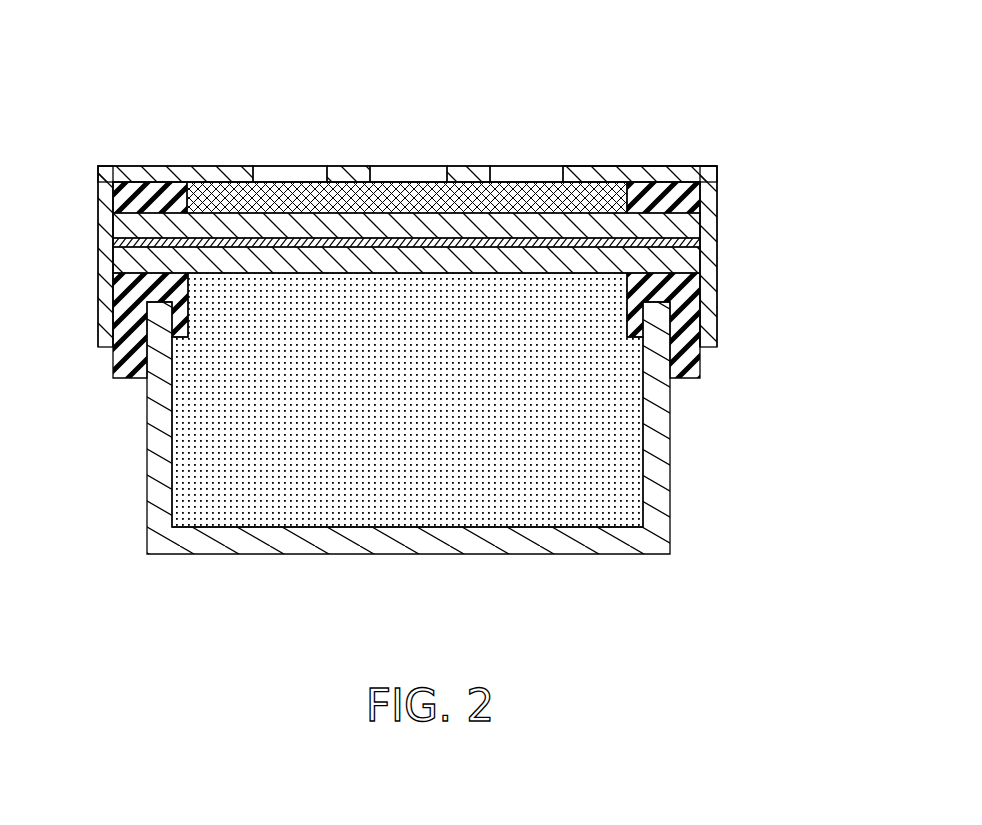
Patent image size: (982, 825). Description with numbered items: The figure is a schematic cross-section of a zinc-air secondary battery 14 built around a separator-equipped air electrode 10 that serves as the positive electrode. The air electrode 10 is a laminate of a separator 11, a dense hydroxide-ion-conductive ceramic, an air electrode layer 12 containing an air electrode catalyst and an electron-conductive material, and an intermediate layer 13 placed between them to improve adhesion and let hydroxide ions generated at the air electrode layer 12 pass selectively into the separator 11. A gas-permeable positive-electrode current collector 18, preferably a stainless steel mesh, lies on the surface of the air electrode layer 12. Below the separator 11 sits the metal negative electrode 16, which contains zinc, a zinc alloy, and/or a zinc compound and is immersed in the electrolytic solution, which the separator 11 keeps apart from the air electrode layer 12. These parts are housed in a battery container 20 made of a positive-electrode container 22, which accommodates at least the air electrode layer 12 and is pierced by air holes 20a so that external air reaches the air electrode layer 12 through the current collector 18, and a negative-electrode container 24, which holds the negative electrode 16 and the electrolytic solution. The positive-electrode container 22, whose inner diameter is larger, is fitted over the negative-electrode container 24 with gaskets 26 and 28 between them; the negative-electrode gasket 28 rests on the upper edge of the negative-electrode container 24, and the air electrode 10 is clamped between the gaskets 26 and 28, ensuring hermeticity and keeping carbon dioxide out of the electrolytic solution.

The zinc-air secondary battery 14 is at (118, 88).
The separator-equipped air electrode 10 is at (480, 240).
The separator 11 is at (452, 269).
The air electrode layer 12 is at (683, 225).
The intermediate layer 13 is at (683, 242).
The metal negative electrode 16 is at (440, 503).
The positive-electrode current collector 18 is at (512, 197).
The battery container 20 is at (108, 298).
The air holes 20a is at (290, 175).
The positive-electrode container 22 is at (601, 176).
The negative-electrode container 24 is at (318, 538).
The gasket 26 is at (176, 190).
The negative-electrode gasket 28 is at (127, 372).